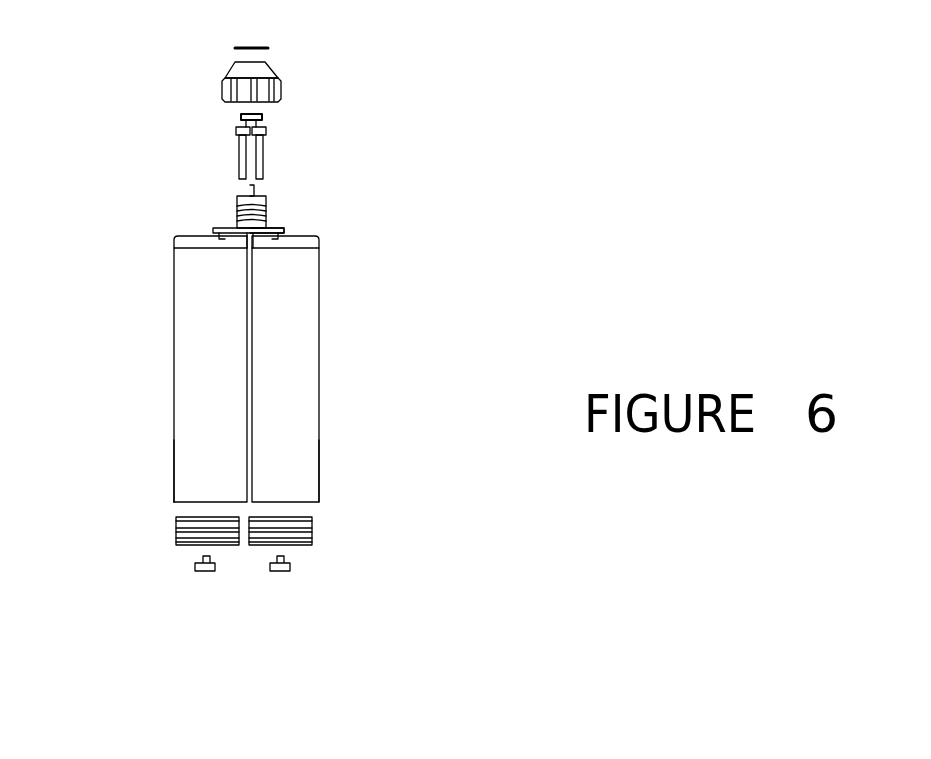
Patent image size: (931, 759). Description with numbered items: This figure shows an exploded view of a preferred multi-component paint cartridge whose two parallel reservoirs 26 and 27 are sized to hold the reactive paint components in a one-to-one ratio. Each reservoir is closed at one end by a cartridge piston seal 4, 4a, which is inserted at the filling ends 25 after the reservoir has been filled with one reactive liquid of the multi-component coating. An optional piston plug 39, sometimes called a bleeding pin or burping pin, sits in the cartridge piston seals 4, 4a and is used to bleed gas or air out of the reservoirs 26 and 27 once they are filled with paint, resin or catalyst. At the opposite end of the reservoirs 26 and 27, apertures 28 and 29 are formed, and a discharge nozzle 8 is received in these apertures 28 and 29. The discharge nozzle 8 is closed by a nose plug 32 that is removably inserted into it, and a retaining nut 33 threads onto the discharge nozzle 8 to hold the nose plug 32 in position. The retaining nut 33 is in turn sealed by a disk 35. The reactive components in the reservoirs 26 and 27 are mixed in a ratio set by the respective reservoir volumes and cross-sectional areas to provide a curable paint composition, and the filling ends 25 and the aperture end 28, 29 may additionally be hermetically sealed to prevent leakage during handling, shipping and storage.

The disk 35 is at (395, 4).
The retaining nut 33 is at (222, 88).
The nose plug 32 is at (266, 131).
The discharge nozzle 8 is at (237, 205).
The aperture 28 is at (226, 237).
The aperture 29 is at (270, 242).
The reservoir 26 is at (192, 334).
The reservoir 27 is at (306, 323).
The filling ends 25 is at (158, 485).
The cartridge piston seal 4 is at (182, 536).
The cartridge piston seal 4a is at (312, 528).
The piston plug 39 is at (208, 600).